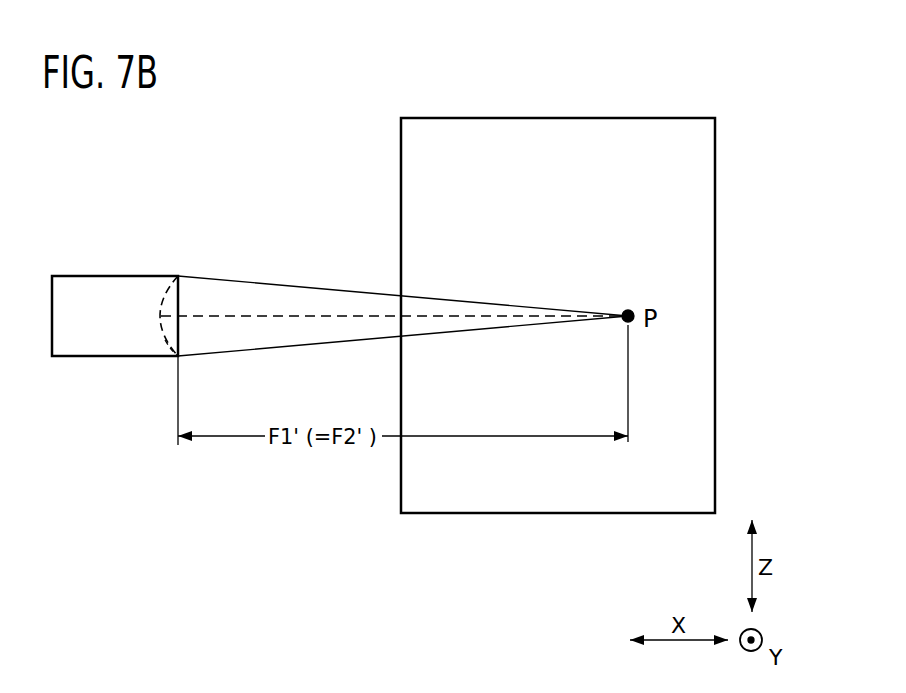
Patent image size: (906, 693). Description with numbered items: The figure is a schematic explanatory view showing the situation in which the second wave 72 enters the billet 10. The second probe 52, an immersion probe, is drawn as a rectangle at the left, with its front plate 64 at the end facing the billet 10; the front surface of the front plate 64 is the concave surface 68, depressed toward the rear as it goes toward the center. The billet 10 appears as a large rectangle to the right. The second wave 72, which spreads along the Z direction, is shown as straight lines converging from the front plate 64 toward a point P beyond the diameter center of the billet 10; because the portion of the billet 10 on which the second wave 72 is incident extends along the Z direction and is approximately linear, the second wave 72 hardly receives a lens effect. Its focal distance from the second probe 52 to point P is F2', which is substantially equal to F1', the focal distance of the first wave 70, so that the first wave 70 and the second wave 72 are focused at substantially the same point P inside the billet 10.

The billet 10 is at (703, 142).
The second probe 52 is at (98, 283).
The front plate 64 is at (180, 297).
The concave surface 68 is at (182, 335).
The first wave 70 is at (253, 317).
The second wave 72 is at (287, 285).